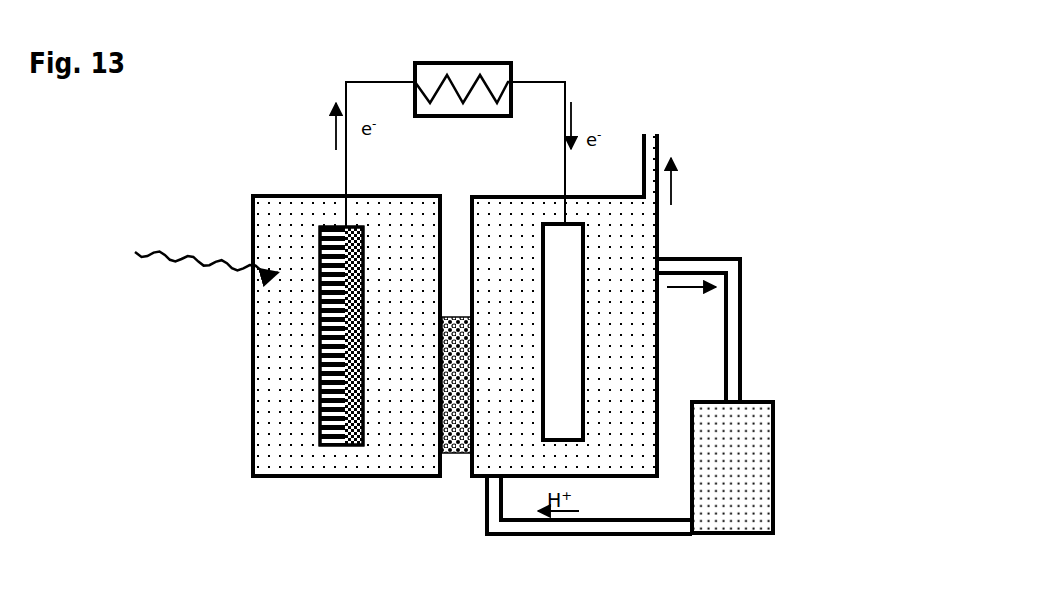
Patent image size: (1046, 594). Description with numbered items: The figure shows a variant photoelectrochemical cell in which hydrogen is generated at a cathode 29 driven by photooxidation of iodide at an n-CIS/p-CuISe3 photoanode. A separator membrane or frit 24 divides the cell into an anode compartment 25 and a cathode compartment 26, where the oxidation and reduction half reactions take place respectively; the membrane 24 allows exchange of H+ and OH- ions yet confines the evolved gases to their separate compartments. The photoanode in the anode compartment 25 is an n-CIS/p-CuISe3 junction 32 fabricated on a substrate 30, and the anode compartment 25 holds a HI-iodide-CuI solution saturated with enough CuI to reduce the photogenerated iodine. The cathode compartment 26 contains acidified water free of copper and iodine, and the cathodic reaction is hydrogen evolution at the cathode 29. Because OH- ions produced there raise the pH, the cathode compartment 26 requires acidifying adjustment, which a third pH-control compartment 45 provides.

The separator membrane or frit 24 is at (462, 452).
The anode compartment 25 is at (293, 195).
The cathode compartment 26 is at (659, 230).
The cathode 29 is at (577, 338).
The substrate 30 is at (268, 343).
The n-CIS/p-CuISe3 junction 32 is at (330, 370).
The pH adjusting unit 45 is at (755, 400).